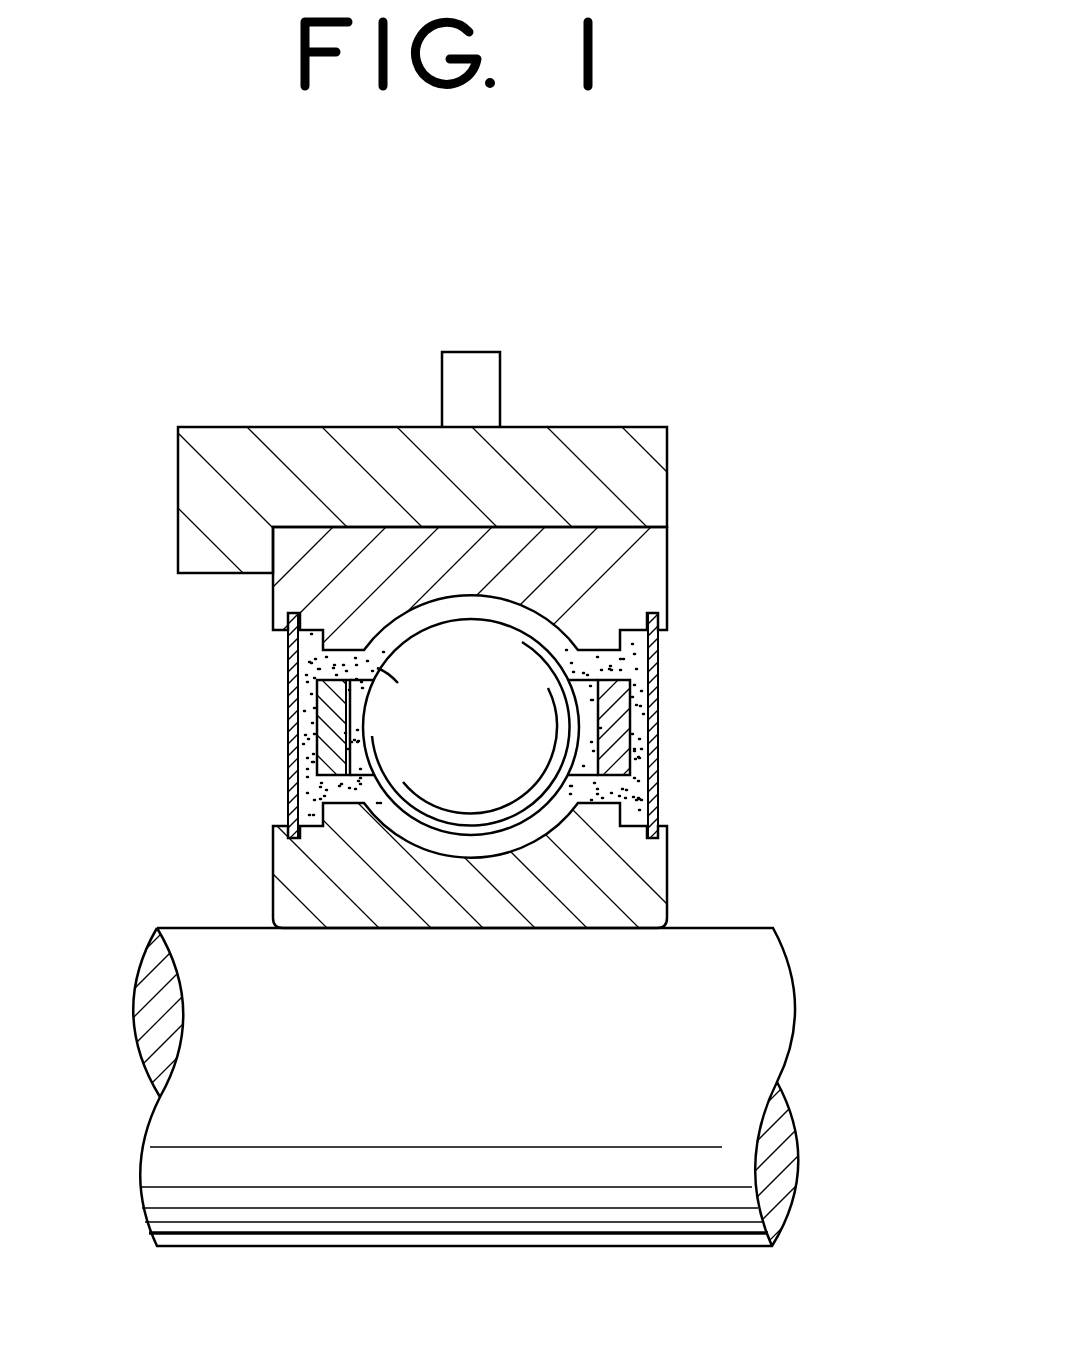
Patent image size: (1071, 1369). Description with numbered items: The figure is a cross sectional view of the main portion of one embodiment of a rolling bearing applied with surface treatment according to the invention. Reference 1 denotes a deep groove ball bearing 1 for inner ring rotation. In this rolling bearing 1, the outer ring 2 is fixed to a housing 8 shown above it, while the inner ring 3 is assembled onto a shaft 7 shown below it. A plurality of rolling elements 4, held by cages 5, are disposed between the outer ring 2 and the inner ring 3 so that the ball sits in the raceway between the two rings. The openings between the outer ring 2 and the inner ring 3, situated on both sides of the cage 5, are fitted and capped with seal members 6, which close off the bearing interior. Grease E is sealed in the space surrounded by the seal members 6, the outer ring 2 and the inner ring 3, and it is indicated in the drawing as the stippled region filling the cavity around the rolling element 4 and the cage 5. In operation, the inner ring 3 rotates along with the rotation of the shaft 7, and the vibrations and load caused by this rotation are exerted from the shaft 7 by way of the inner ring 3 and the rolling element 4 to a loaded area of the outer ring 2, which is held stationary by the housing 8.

The deep groove ball bearing 1 is at (541, 720).
The outer ring 2 is at (628, 577).
The inner ring 3 is at (638, 887).
The rolling element 4 is at (398, 683).
The cage 5 is at (325, 745).
The seal member 6 is at (287, 720).
The shaft 7 is at (203, 1103).
The housing 8 is at (593, 440).
The grease E is at (623, 660).